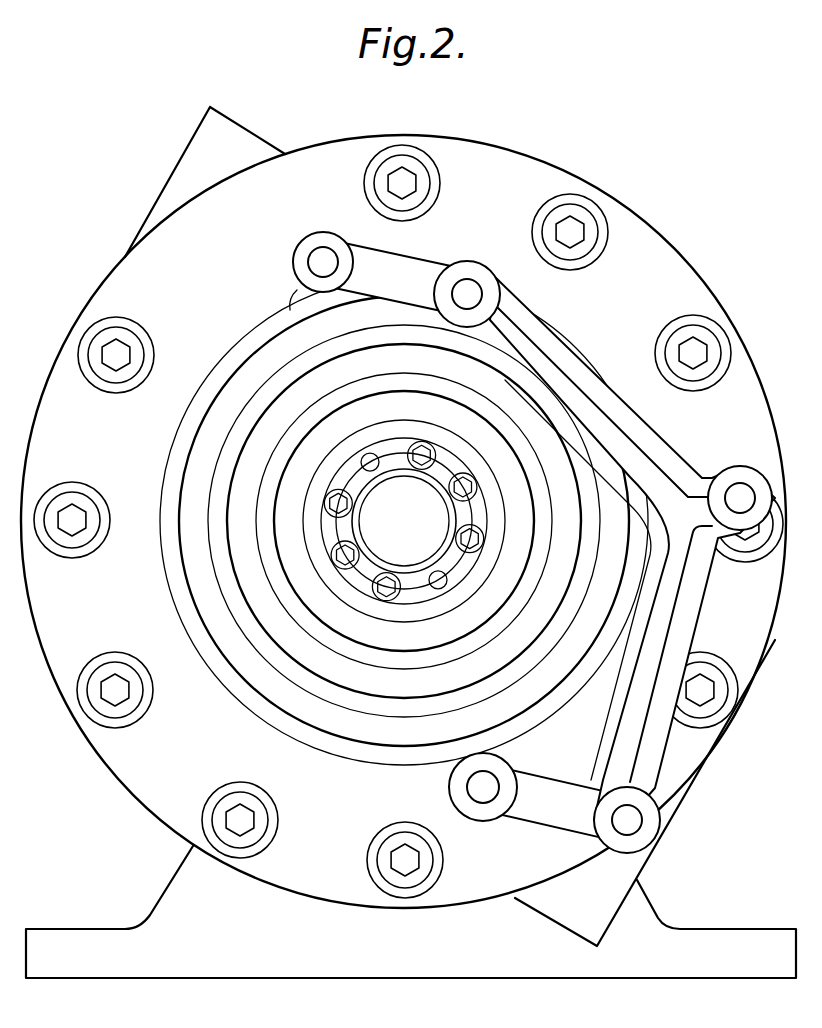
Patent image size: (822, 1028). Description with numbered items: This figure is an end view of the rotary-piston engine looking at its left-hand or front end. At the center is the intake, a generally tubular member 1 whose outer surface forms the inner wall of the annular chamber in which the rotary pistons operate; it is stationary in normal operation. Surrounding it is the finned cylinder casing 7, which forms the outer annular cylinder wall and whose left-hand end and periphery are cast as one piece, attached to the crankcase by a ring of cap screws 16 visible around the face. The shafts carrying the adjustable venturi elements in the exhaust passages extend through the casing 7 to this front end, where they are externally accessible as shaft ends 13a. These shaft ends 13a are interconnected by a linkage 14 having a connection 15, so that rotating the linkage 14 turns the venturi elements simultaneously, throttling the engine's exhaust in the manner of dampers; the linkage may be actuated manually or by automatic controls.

The tubular member 1 is at (410, 570).
The finned cylinder casing 7 is at (137, 762).
The externally accessible shaft end 13a is at (322, 262).
The linkage 14 is at (636, 437).
The connection 15 is at (740, 498).
The cap screws 16 is at (683, 352).